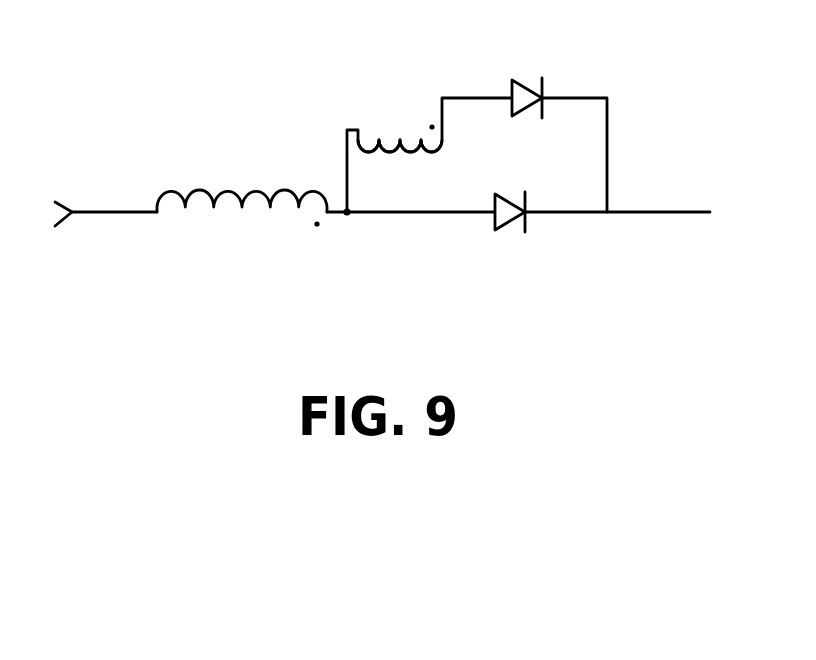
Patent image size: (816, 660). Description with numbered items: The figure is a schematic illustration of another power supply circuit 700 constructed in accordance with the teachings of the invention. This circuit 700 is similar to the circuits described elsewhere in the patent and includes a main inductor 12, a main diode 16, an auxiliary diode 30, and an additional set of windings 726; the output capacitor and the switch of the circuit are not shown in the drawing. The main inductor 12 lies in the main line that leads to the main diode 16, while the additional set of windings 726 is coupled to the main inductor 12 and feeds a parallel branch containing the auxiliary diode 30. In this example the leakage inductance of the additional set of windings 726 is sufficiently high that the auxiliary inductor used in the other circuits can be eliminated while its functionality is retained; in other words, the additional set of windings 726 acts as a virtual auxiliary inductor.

The circuit 700 is at (210, 323).
The main inductor 12 is at (222, 188).
The additional set of windings 726 is at (373, 138).
The auxiliary diode 30 is at (527, 78).
The main diode 16 is at (502, 226).